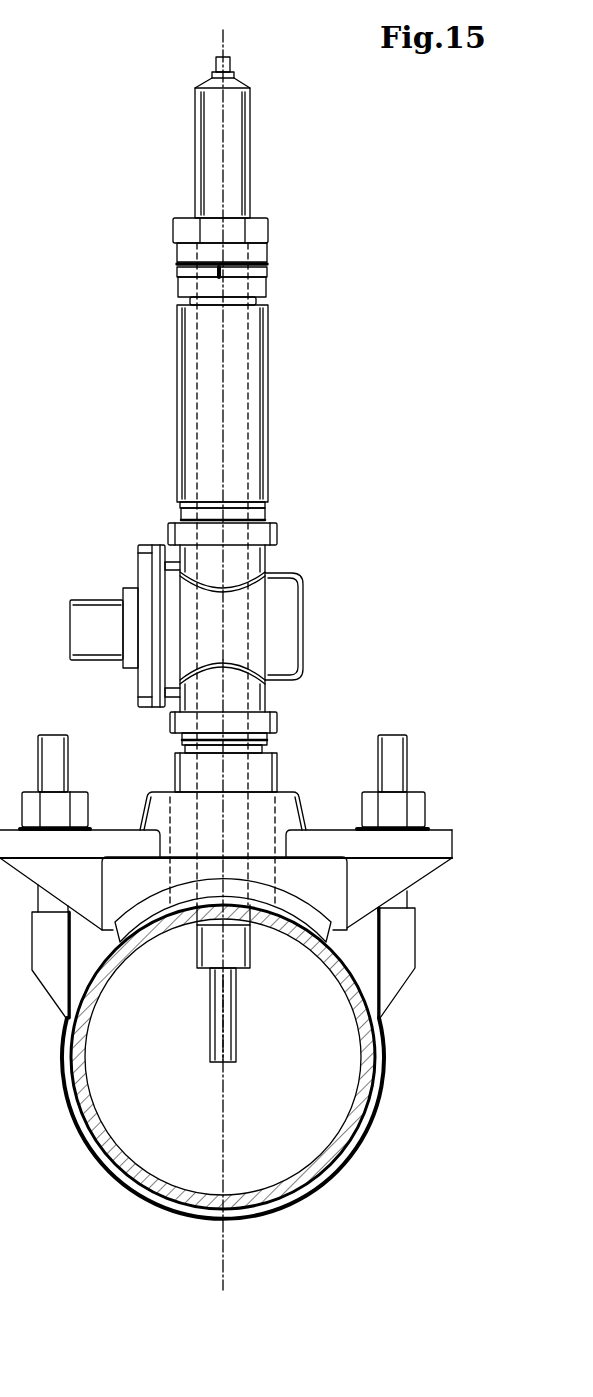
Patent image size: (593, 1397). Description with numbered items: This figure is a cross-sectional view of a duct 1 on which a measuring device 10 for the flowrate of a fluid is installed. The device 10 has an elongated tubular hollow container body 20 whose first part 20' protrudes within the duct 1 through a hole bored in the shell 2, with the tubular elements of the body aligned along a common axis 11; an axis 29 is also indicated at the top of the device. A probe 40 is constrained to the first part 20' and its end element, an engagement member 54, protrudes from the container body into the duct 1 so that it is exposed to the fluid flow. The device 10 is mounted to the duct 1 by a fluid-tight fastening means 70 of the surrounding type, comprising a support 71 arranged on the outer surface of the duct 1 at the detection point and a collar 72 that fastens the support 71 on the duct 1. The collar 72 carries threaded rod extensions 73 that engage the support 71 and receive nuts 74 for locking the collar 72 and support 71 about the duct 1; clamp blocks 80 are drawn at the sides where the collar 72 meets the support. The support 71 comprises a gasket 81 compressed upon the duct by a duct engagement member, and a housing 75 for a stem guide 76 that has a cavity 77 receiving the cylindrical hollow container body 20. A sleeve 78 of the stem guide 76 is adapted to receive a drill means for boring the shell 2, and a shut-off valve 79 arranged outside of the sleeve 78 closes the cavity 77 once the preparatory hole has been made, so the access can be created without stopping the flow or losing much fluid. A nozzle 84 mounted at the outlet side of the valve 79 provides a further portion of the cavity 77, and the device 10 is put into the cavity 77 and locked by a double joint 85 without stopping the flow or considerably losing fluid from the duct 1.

The duct 1 is at (85, 983).
The shell 2 is at (266, 930).
The device 10 is at (159, 172).
The common axis 11 is at (229, 1241).
The hollow elongated container body 20 is at (255, 496).
The first part of the hollow elongated container body 20' is at (189, 964).
The axis 29 is at (226, 50).
The probe 40 is at (206, 1046).
The engagement member 54 is at (238, 1050).
The fluid-tight fastening means 70 is at (410, 621).
The support 71 is at (313, 830).
The collar 72 is at (337, 1175).
The threaded rod extensions 73 is at (398, 733).
The nuts 74 is at (418, 790).
The housing 75 is at (280, 789).
The stem guide 76 is at (305, 534).
The cavity 77 is at (195, 482).
The sleeve 78 is at (170, 730).
The shut-off valve 79 is at (282, 613).
The clamp block 80 is at (412, 962).
The gasket 81 is at (298, 922).
The nozzle 84 is at (263, 395).
The double joint 85 is at (268, 282).